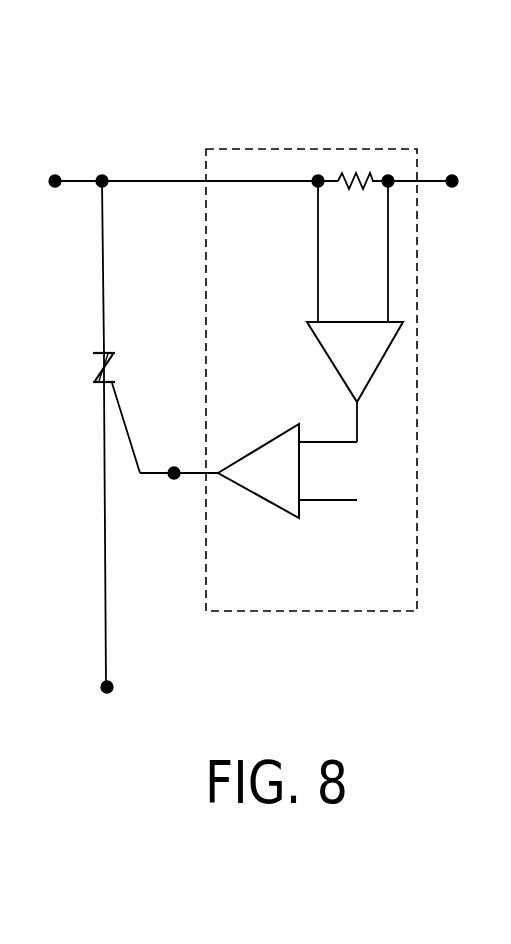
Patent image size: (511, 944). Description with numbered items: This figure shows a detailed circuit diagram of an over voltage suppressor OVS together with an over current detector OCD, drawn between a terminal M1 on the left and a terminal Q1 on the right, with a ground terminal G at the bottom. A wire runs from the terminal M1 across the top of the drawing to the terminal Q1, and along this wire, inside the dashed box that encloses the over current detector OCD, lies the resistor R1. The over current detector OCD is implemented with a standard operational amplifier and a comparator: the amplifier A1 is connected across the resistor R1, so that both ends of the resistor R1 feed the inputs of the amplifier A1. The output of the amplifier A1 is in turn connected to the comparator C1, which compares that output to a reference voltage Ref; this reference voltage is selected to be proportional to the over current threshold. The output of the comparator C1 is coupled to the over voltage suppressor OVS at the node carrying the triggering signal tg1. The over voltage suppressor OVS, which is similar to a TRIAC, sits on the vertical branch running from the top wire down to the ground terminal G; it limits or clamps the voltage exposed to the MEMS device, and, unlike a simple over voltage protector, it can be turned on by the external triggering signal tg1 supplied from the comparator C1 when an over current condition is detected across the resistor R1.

The input terminal M1 is at (56, 158).
The output terminal Q1 is at (446, 157).
The resistor R1 is at (353, 201).
The amplifier A1 is at (355, 311).
The comparator C1 is at (287, 471).
The reference voltage Ref is at (350, 499).
The over voltage suppressor OVS is at (134, 366).
The triggering signal tg1 is at (165, 431).
The ground terminal G is at (123, 686).
The over current detector OCD is at (342, 597).